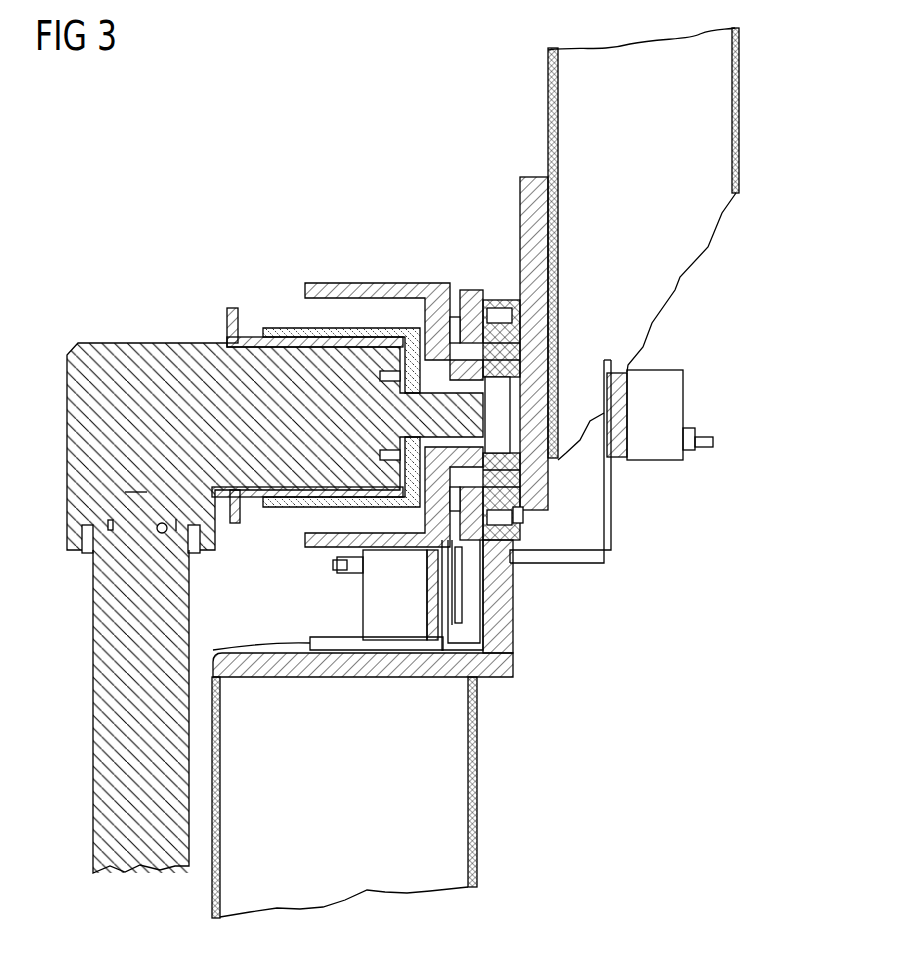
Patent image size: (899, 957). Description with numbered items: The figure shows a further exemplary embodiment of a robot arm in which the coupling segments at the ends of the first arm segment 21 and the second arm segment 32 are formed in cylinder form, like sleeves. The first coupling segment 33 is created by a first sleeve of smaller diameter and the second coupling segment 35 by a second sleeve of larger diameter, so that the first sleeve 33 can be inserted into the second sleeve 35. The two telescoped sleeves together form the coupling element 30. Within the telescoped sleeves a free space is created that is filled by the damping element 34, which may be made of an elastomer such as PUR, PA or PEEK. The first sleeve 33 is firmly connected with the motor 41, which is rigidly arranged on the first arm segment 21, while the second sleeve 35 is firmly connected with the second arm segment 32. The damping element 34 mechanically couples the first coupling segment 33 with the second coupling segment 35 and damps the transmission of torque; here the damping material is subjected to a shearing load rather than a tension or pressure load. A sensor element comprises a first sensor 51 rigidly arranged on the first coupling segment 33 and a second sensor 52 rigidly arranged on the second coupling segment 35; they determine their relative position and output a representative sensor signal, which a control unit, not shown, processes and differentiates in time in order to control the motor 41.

The first arm segment 21 is at (748, 116).
The coupling element 30 is at (286, 182).
The second arm segment 32 is at (83, 328).
The first coupling segment 33 is at (287, 322).
The damping element 34 is at (335, 310).
The second coupling segment 35 is at (395, 276).
The motor 41 is at (77, 568).
The first sensor 51 is at (360, 603).
The second sensor 52 is at (700, 408).